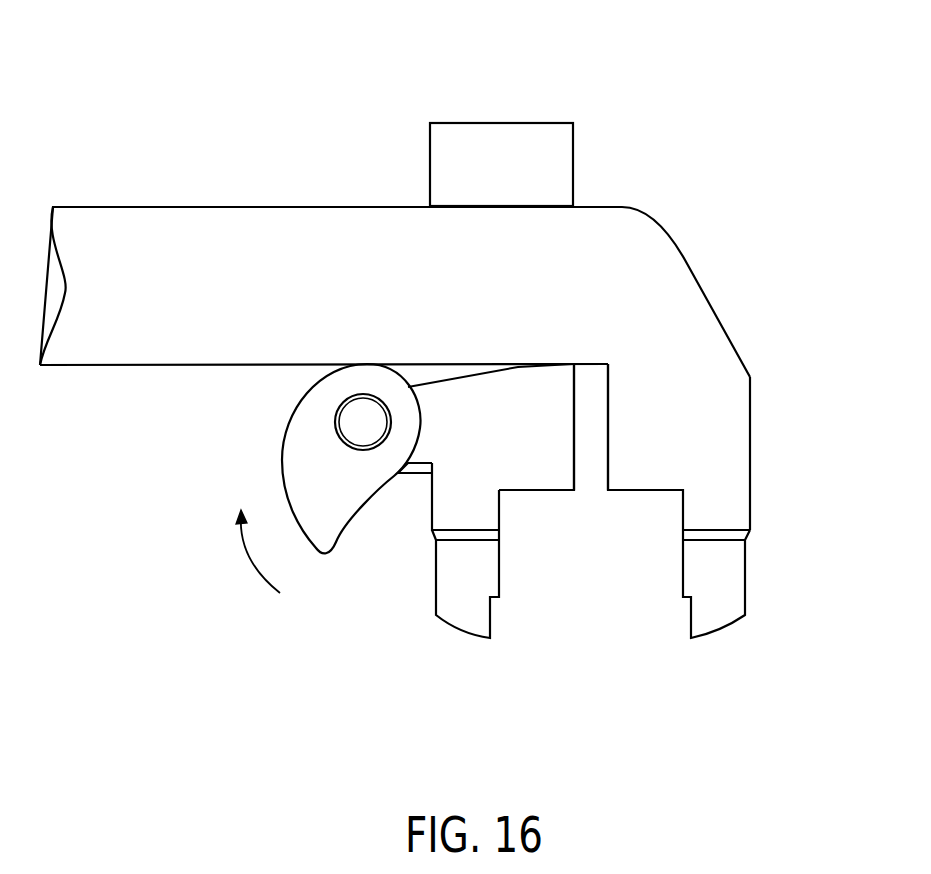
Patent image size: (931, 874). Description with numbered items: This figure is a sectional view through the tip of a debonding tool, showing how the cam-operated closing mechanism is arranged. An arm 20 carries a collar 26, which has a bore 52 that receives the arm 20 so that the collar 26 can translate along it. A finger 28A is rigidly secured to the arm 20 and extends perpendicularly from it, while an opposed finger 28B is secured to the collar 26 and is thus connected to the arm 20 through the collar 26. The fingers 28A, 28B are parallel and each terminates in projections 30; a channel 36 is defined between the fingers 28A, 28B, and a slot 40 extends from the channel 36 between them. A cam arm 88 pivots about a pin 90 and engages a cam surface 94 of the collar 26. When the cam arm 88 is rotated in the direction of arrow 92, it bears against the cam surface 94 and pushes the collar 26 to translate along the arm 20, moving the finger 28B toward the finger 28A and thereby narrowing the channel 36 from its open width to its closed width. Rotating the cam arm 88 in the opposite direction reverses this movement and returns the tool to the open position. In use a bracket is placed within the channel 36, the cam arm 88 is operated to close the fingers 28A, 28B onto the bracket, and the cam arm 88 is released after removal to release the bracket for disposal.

The arm 20 is at (232, 228).
The collar 26 is at (508, 132).
The bore 52 is at (523, 218).
The slot 40 is at (588, 420).
The finger 28A is at (725, 458).
The finger 28B is at (440, 517).
The projections 30 is at (452, 582).
The cam arm 88 is at (298, 465).
The pin 90 is at (355, 410).
The cam surface 94 is at (425, 436).
The arrow 92 is at (250, 562).
The channel 36 is at (598, 643).